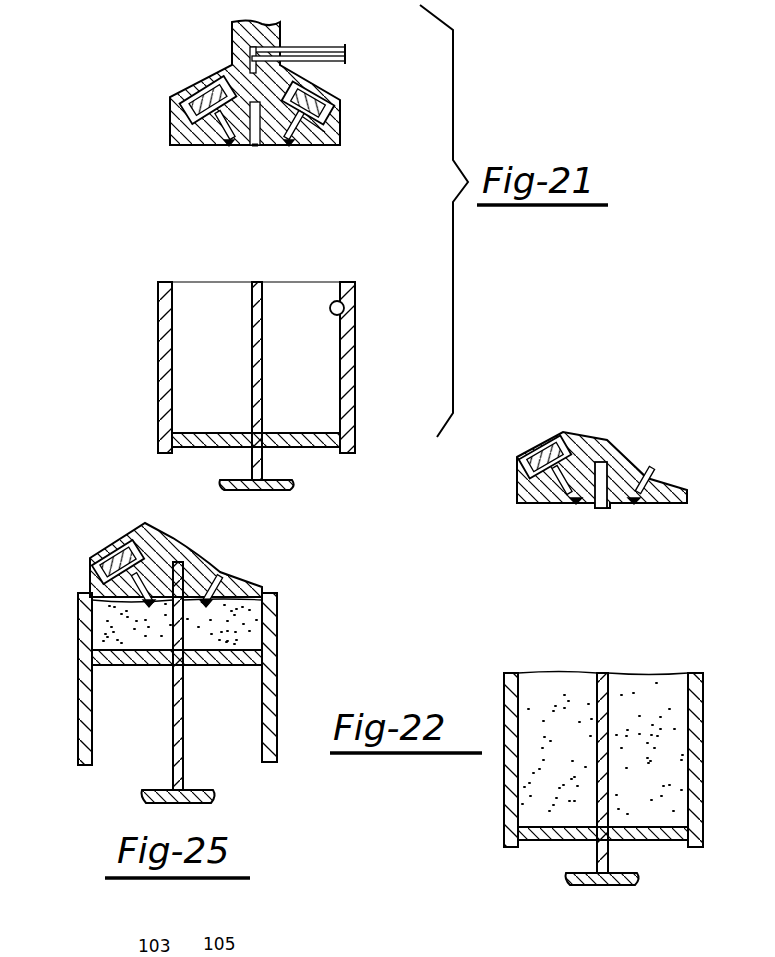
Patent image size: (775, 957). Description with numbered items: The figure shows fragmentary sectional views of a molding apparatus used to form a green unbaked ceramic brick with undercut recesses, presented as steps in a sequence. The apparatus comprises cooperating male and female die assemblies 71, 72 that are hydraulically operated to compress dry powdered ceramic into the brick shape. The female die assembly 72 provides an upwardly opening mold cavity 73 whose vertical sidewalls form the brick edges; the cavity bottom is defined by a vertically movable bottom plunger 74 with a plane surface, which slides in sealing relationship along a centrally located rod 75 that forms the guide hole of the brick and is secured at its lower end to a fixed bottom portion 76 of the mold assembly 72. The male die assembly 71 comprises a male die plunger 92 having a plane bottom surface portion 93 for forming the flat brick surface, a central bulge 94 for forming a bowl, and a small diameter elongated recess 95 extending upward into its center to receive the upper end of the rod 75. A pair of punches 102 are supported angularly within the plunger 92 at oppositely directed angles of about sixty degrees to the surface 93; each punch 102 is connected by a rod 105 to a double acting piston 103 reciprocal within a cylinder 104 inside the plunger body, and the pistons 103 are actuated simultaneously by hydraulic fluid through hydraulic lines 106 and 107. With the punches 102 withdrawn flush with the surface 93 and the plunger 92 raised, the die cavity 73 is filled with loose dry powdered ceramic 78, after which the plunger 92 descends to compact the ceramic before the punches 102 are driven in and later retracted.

In FIG. 21, the male die assembly 71 is at (160, 100).
In FIG. 22, the male die assembly 71 is at (510, 452).
In FIG. 25, the male die assembly 71 is at (82, 556).
In FIG. 21, the female die assembly 72 is at (396, 385).
In FIG. 21, the mold cavity 73 is at (344, 308).
In FIG. 21, the bottom plunger 74 is at (310, 433).
In FIG. 21, the rod 75 is at (250, 345).
In FIG. 21, the fixed bottom portion 76 is at (290, 489).
In FIG. 22, the fixed bottom portion 76 is at (640, 882).
In FIG. 25, the fixed bottom portion 76 is at (212, 798).
In FIG. 22, the loose dry powdered ceramic 78 is at (660, 673).
In FIG. 21, the male die plunger 92 is at (343, 140).
In FIG. 21, the plane bottom surface portion 93 is at (322, 146).
In FIG. 21, the central bulge 94 is at (262, 150).
In FIG. 21, the elongated recess 95 is at (256, 150).
In FIG. 21, the punches 102 is at (222, 150).
In FIG. 22, the punches 102 is at (585, 505).
In FIG. 25, the punches 102 is at (140, 600).
In FIG. 21, the double acting piston 103 is at (205, 90).
In FIG. 22, the double acting piston 103 is at (548, 450).
In FIG. 25, the double acting piston 103 is at (120, 545).
In FIG. 21, the cylinder 104 is at (188, 124).
In FIG. 22, the cylinder 104 is at (530, 478).
In FIG. 25, the cylinder 104 is at (110, 580).
In FIG. 21, the rod 105 is at (200, 145).
In FIG. 22, the rod 105 is at (590, 462).
In FIG. 25, the rod 105 is at (150, 565).
In FIG. 21, the hydraulic line 106 is at (345, 48).
In FIG. 21, the hydraulic line 107 is at (345, 61).
In FIG. 22, the hydraulic line 107 is at (523, 485).